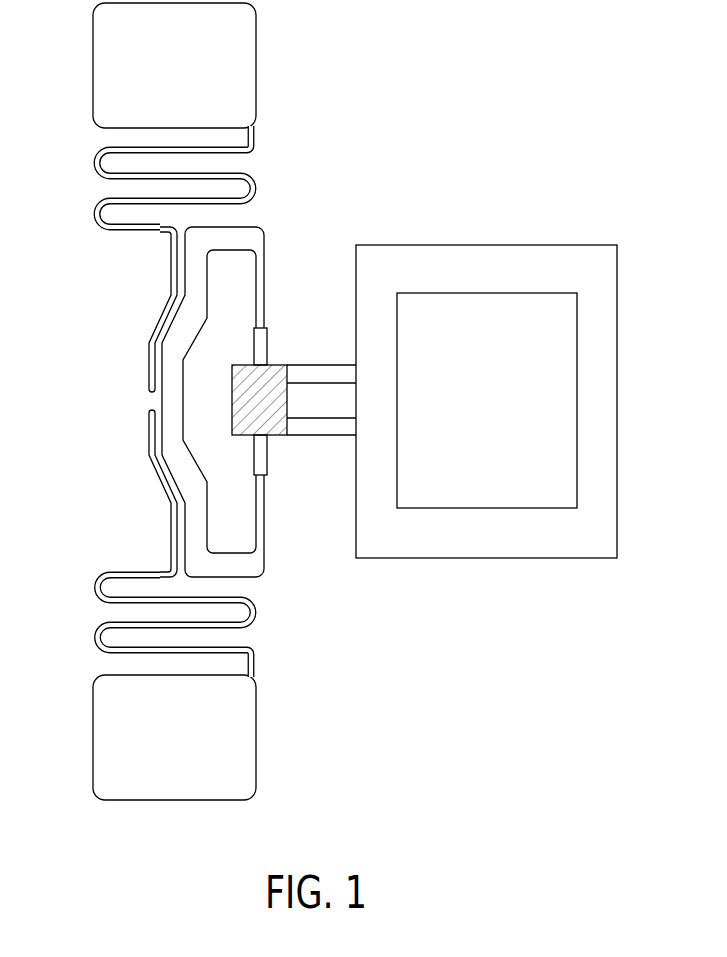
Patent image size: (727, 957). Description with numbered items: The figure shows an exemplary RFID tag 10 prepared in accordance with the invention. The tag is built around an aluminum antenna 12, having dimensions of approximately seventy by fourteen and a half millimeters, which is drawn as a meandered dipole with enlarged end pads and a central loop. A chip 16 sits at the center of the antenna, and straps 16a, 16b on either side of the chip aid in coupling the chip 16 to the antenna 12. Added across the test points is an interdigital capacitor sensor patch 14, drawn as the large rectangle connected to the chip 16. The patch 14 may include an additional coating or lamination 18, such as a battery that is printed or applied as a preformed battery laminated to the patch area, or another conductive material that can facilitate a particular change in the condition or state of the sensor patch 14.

The RFID tag 10 is at (416, 95).
The antenna 12 is at (95, 215).
The interdigital capacitor sensor patch 14 is at (617, 405).
The chip 16 is at (246, 372).
The strap 16a is at (267, 347).
The strap 16b is at (267, 455).
The coating or lamination 18 is at (577, 352).